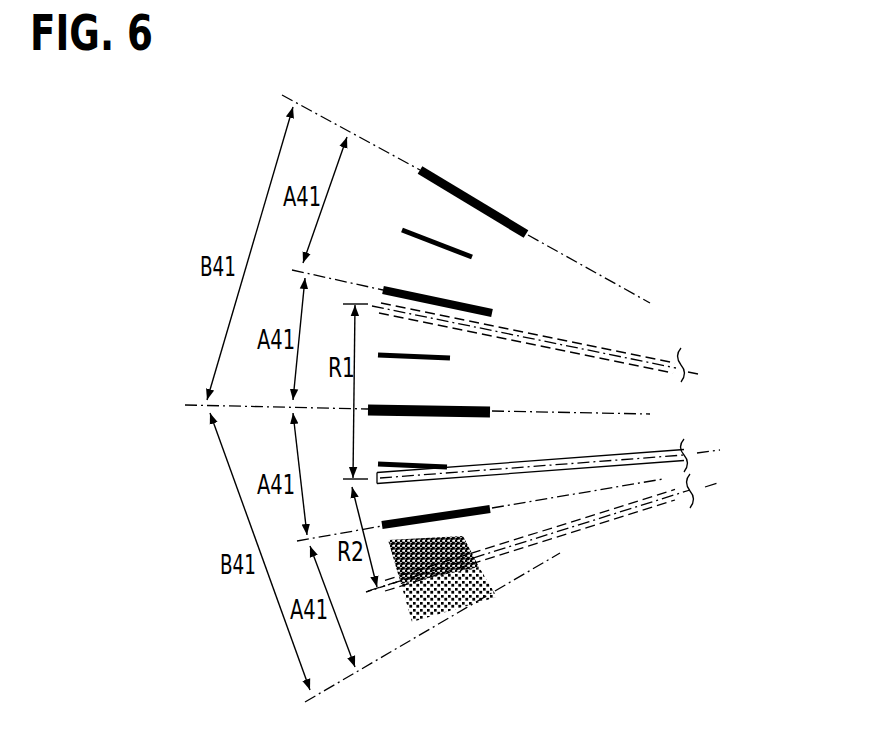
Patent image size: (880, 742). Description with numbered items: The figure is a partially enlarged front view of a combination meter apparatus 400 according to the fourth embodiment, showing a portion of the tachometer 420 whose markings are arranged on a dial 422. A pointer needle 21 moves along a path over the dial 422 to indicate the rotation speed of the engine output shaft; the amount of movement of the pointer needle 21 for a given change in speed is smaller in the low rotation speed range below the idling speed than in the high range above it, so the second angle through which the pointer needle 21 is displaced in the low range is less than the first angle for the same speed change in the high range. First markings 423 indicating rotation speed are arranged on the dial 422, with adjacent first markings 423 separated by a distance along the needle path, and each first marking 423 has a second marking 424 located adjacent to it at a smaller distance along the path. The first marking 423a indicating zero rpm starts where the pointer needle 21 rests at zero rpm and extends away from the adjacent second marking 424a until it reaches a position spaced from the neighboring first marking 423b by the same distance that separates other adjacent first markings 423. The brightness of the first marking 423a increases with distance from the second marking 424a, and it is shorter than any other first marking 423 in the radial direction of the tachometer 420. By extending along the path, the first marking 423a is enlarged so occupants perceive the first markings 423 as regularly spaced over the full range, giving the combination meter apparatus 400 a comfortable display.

The pointer needle 21 is at (643, 352).
The combination meter apparatus 400 is at (697, 190).
The tachometer 420 is at (480, 171).
The dial 422 is at (397, 600).
The first marking 423 is at (425, 168).
The first marking 423a is at (447, 593).
The first marking 423b is at (387, 416).
The second marking 424 is at (400, 287).
The second marking 424a is at (443, 537).